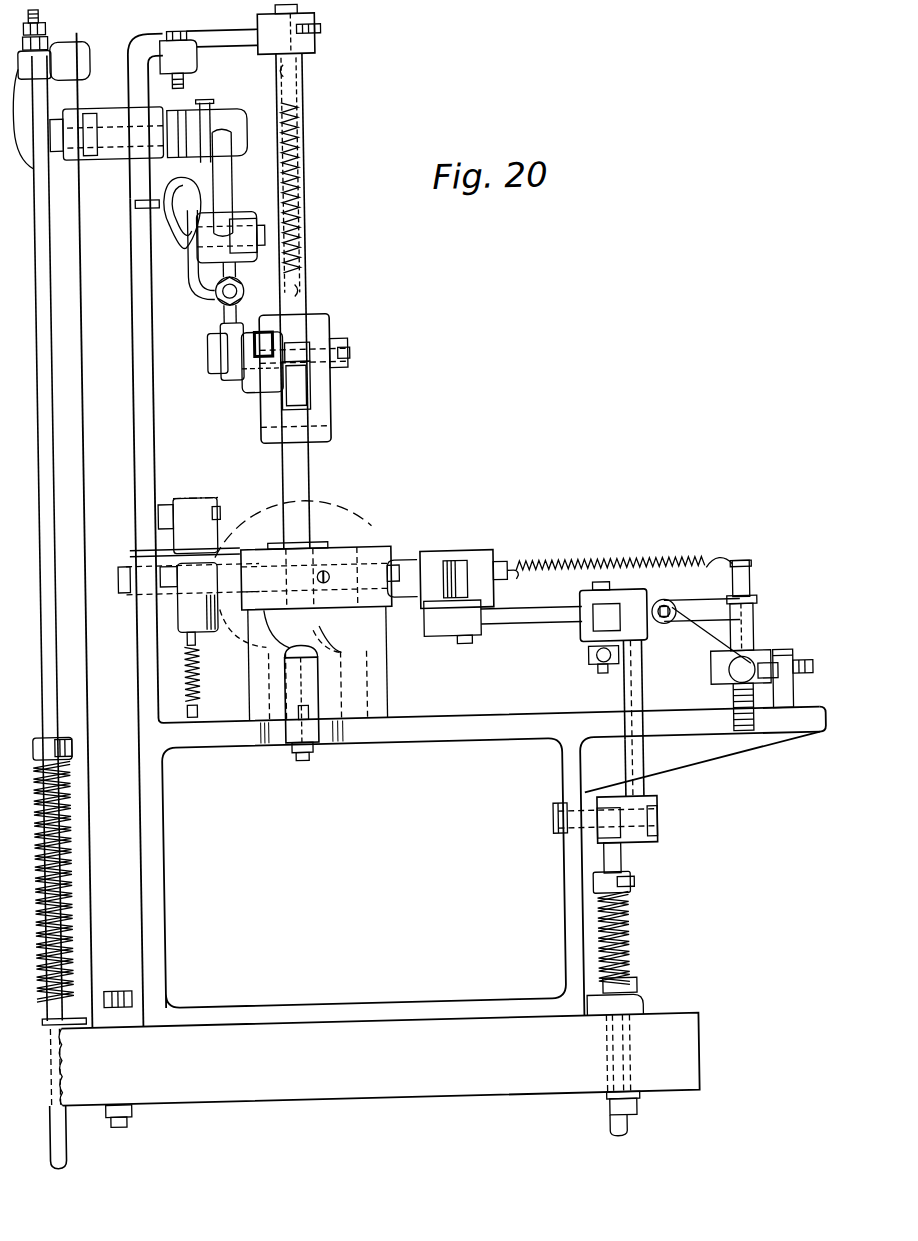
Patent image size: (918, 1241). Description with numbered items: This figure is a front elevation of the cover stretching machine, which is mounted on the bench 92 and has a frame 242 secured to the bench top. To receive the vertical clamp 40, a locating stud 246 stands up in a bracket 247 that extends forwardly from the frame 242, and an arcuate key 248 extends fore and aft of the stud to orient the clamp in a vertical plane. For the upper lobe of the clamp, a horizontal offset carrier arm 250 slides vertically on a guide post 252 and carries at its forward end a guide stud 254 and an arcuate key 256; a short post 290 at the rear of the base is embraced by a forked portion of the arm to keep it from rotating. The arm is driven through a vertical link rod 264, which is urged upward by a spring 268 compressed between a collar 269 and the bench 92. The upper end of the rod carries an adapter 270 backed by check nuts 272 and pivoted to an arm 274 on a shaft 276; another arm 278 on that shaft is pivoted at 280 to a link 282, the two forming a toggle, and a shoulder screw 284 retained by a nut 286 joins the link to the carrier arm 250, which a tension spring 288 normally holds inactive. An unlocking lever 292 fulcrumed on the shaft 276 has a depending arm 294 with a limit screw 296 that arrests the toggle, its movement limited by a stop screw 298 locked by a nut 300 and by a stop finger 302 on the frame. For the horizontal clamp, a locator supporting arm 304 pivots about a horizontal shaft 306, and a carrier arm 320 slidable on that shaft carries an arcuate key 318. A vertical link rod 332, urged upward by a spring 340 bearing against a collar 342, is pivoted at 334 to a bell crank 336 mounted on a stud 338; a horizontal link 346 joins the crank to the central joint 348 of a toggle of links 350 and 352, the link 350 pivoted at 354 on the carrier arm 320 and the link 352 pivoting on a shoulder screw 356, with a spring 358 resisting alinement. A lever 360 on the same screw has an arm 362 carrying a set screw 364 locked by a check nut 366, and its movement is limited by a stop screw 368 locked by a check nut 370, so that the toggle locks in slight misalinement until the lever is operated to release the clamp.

The clamp 40 is at (335, 495).
The bench 92 is at (680, 1054).
The frame 242 is at (562, 897).
The locating stud 246 is at (301, 758).
The bracket 247 is at (302, 684).
The arcuate key 248 is at (316, 645).
The carrier arm 250 is at (280, 390).
The guide post 252 is at (302, 517).
The guide stud 254 is at (302, 344).
The arcuate key 256 is at (303, 410).
The vertical link rod 264 is at (55, 303).
The spring 268 is at (70, 829).
The collar 269 is at (58, 728).
The adapter 270 is at (31, 71).
The check nuts 272 is at (55, 24).
The arm 274 is at (66, 92).
The shaft 276 is at (252, 126).
The arm 278 is at (239, 167).
The pivot 280 is at (266, 236).
The link 282 is at (232, 316).
The shoulder screw 284 is at (354, 352).
The nut 286 is at (340, 338).
The tension spring 288 is at (309, 248).
The short post 290 is at (322, 616).
The unlocking lever 292 is at (170, 212).
The depending arm 294 is at (193, 265).
The limit screw 296 is at (248, 287).
The stop screw 298 is at (83, 92).
The nut 300 is at (206, 22).
The stop finger 302 is at (198, 113).
The locator supporting arm 304 is at (185, 608).
The horizontal shaft 306 is at (123, 563).
The arcuate key 318 is at (411, 598).
The carrier arm 320 is at (466, 553).
The vertical link rod 332 is at (619, 1129).
The pivotal connection 334 is at (654, 826).
The bell crank 336 is at (641, 786).
The stud 338 is at (550, 827).
The spring 340 is at (622, 919).
The collar 342 is at (618, 877).
The horizontal link 346 is at (594, 650).
The central joint 348 is at (599, 678).
The link 350 is at (528, 627).
The link 352 is at (697, 614).
The pivotal connection 354 is at (466, 642).
The shoulder screw 356 is at (748, 600).
The spring 358 is at (599, 565).
The lever 360 is at (739, 676).
The arm 362 is at (642, 692).
The set screw 364 is at (672, 572).
The check nut 366 is at (669, 632).
The stop screw 368 is at (807, 670).
The check nut 370 is at (786, 659).